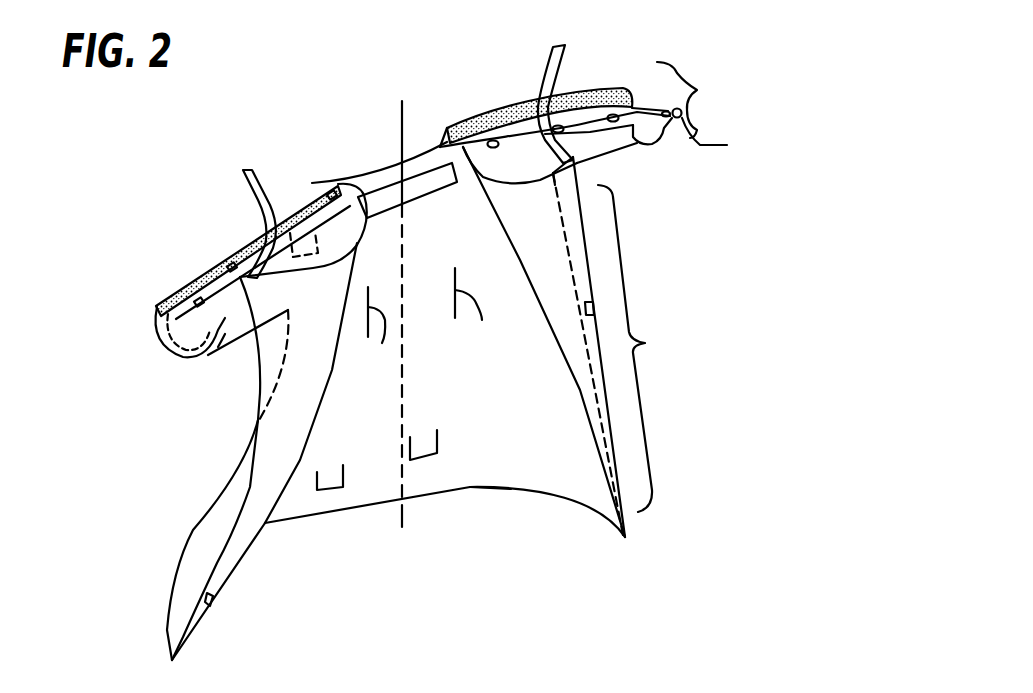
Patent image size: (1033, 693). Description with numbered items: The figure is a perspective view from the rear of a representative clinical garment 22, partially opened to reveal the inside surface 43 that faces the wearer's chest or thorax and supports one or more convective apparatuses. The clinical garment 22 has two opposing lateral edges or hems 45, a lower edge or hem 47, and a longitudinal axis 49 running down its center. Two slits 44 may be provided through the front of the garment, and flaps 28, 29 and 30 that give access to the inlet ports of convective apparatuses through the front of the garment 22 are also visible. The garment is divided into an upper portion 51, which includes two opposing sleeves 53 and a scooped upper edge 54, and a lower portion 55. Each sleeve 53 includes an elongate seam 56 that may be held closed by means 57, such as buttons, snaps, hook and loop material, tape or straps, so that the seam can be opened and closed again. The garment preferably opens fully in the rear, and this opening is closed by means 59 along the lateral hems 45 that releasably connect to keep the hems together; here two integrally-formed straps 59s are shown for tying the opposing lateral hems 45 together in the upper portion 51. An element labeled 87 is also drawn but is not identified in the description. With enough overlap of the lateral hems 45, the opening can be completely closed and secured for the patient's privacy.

The clinical garment 22 is at (421, 347).
The flap 28 is at (437, 440).
The flap 29 is at (300, 245).
The flap 30 is at (343, 477).
The inside surface 43 is at (376, 431).
The slits 44 is at (428, 319).
The lateral edges or hems 45 is at (253, 363).
The lower edge or hem 47 is at (510, 488).
The longitudinal axis 49 is at (402, 127).
The upper portion 51 is at (695, 100).
The sleeves 53 is at (220, 357).
The scooped upper edge 54 is at (368, 188).
The lower portion 55 is at (639, 348).
The elongate seam 56 is at (198, 272).
The means for holding seam closed 57 is at (719, 139).
The means for closing opening 59 is at (584, 308).
The integrally-formed straps 59s is at (243, 190).
The neck strap 87 is at (440, 163).